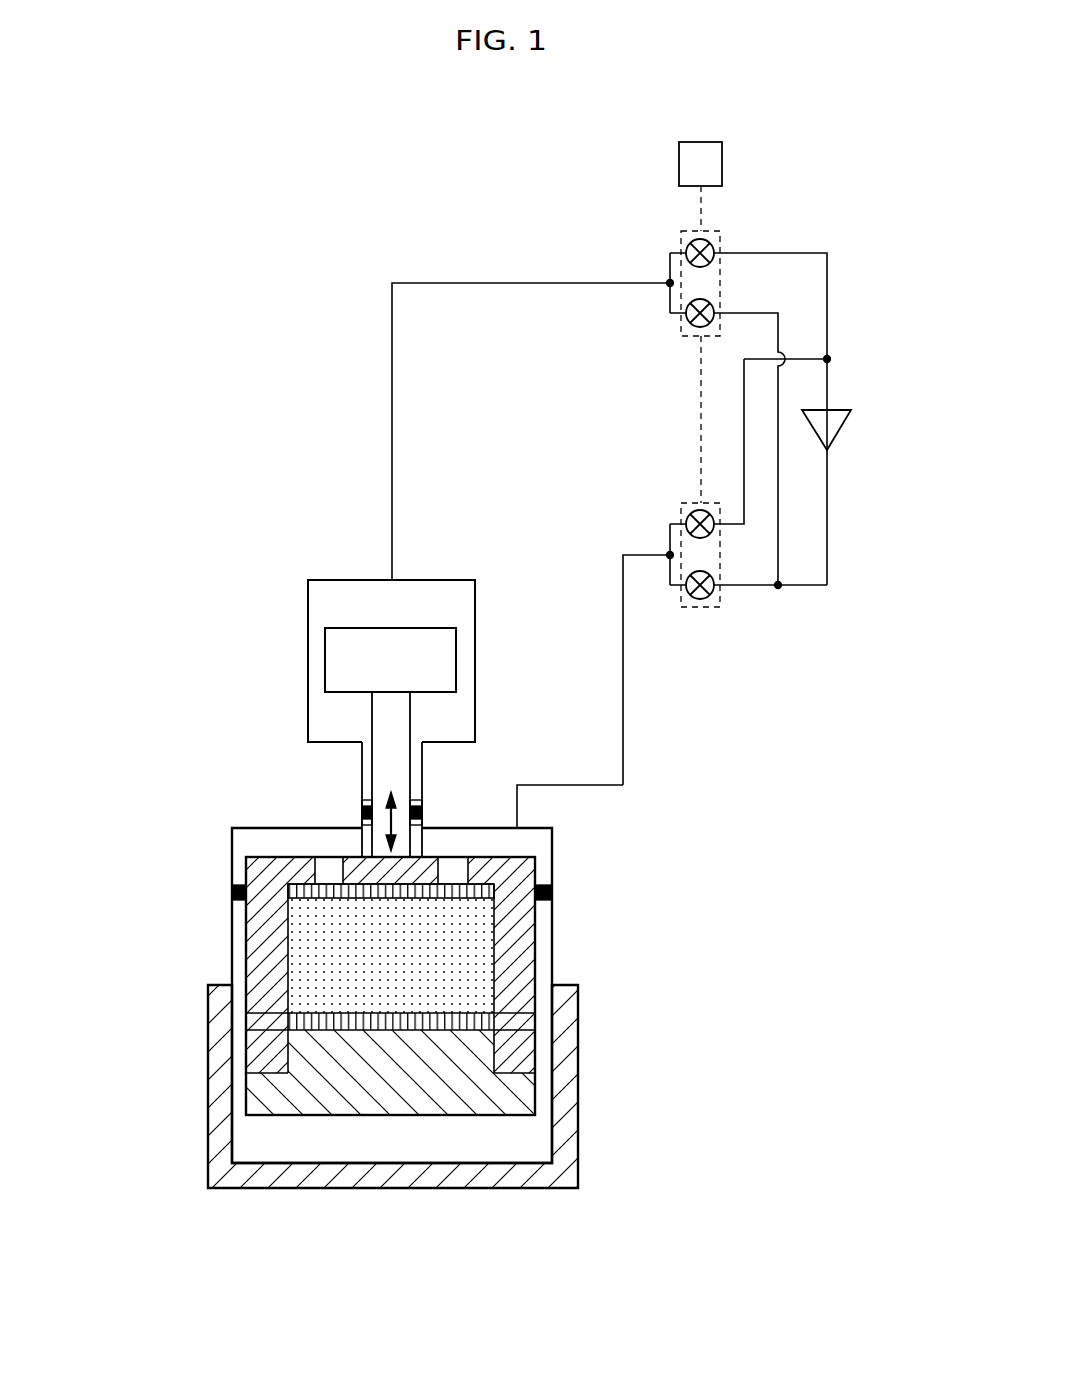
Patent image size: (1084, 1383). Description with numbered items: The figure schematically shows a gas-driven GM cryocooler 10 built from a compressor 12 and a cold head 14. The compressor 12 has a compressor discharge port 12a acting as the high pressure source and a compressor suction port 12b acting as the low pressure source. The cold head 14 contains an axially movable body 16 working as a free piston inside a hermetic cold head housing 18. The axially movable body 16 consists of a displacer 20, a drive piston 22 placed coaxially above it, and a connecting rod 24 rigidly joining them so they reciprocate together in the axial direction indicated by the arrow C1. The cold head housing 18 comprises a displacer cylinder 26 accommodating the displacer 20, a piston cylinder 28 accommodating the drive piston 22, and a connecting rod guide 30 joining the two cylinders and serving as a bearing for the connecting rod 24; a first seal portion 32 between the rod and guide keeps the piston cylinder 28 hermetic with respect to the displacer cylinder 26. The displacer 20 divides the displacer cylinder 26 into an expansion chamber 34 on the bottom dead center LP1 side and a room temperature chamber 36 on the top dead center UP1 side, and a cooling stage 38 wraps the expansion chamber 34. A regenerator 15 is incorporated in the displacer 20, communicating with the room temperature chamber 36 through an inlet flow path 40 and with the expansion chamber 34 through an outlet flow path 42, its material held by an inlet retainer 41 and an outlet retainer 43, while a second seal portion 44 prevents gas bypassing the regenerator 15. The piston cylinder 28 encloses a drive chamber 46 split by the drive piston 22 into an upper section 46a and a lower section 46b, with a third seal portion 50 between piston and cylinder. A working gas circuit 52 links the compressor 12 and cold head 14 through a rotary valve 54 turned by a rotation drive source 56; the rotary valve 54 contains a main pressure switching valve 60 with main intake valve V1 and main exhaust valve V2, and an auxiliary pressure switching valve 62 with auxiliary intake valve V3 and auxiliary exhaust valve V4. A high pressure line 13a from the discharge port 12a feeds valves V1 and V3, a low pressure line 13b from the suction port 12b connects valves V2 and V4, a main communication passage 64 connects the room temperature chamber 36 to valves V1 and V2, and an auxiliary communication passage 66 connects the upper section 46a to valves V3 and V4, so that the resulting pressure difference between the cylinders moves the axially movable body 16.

The cryocooler 10 is at (374, 1310).
The compressor 12 is at (838, 430).
The compressor discharge port 12a is at (832, 446).
The compressor suction port 12b is at (840, 408).
The high pressure line 13a is at (800, 586).
The low pressure line 13b is at (790, 253).
The cold head 14 is at (218, 1202).
The regenerator 15 is at (495, 916).
The axially movable body 16 is at (97, 652).
The cold head housing 18 is at (751, 708).
The displacer 20 is at (422, 994).
The drive piston 22 is at (352, 655).
The connecting rod 24 is at (385, 768).
The displacer cylinder 26 is at (552, 948).
The piston cylinder 28 is at (475, 717).
The connecting rod guide 30 is at (422, 768).
The first seal portion 32 is at (423, 812).
The expansion chamber 34 is at (523, 1140).
The room temperature chamber 36 is at (540, 843).
The cooling stage 38 is at (218, 1097).
The inlet flow path 40 is at (327, 873).
The inlet retainer 41 is at (300, 905).
The outlet flow path 42 is at (536, 1022).
The outlet retainer 43 is at (300, 1022).
The second seal portion 44 is at (552, 893).
The drive chamber 46 is at (459, 655).
The upper section 46a is at (448, 597).
The lower section 46b is at (450, 703).
The third seal portion 50 is at (330, 657).
The working gas circuit 52 is at (655, 254).
The rotary valve 54 is at (512, 332).
The rotation drive source 56 is at (704, 142).
The main pressure switching valve 60 is at (690, 503).
The auxiliary pressure switching valve 62 is at (690, 336).
The main communication passage 64 is at (623, 650).
The auxiliary communication passage 66 is at (450, 283).
The main intake valve V1 is at (706, 600).
The main exhaust valve V2 is at (686, 535).
The auxiliary intake valve V3 is at (712, 305).
The auxiliary exhaust valve V4 is at (712, 243).
The top dead center UP1 is at (292, 828).
The arrow indicating axial direction C1 is at (385, 843).
The bottom dead center LP1 is at (284, 1163).